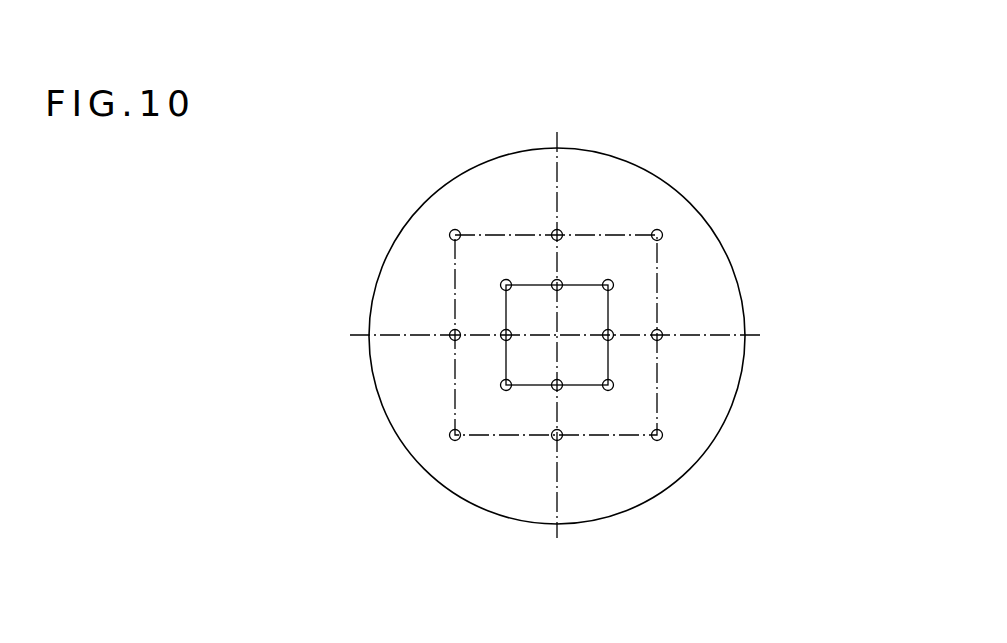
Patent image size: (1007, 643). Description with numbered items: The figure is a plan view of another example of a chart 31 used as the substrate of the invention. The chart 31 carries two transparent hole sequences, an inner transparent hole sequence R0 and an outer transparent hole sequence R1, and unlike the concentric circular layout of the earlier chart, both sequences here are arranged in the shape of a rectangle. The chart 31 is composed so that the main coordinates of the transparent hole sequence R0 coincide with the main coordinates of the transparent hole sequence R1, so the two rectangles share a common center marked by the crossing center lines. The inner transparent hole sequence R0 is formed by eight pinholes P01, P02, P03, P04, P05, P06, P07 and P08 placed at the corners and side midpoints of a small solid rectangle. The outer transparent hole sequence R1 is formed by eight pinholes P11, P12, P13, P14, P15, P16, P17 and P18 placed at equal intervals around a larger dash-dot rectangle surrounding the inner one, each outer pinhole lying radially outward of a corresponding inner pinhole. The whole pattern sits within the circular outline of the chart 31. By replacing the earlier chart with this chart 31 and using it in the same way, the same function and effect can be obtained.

The chart 31 is at (523, 173).
The transparent hole sequence R0 is at (587, 283).
The transparent hole sequence R1 is at (661, 407).
The pinhole P01 is at (560, 282).
The pinhole P02 is at (613, 285).
The pinhole P03 is at (613, 338).
The pinhole P04 is at (608, 391).
The pinhole P05 is at (553, 391).
The pinhole P06 is at (500, 385).
The pinhole P07 is at (500, 332).
The pinhole P08 is at (506, 279).
The pinhole P11 is at (560, 231).
The pinhole P12 is at (662, 236).
The pinhole P13 is at (662, 337).
The pinhole P14 is at (658, 441).
The pinhole P15 is at (555, 440).
The pinhole P16 is at (452, 437).
The pinhole P17 is at (452, 332).
The pinhole P18 is at (454, 229).